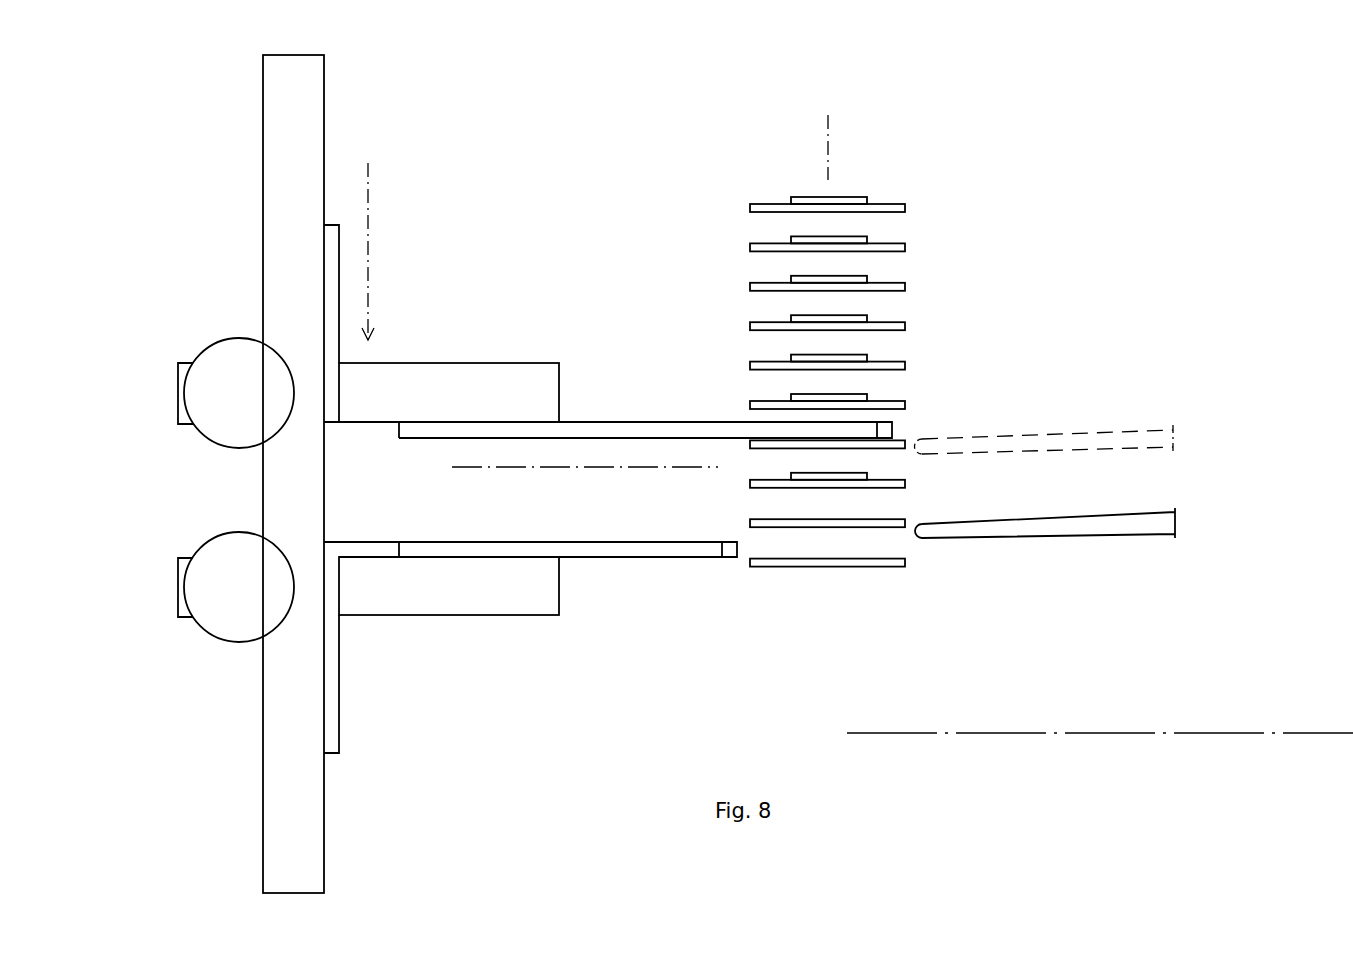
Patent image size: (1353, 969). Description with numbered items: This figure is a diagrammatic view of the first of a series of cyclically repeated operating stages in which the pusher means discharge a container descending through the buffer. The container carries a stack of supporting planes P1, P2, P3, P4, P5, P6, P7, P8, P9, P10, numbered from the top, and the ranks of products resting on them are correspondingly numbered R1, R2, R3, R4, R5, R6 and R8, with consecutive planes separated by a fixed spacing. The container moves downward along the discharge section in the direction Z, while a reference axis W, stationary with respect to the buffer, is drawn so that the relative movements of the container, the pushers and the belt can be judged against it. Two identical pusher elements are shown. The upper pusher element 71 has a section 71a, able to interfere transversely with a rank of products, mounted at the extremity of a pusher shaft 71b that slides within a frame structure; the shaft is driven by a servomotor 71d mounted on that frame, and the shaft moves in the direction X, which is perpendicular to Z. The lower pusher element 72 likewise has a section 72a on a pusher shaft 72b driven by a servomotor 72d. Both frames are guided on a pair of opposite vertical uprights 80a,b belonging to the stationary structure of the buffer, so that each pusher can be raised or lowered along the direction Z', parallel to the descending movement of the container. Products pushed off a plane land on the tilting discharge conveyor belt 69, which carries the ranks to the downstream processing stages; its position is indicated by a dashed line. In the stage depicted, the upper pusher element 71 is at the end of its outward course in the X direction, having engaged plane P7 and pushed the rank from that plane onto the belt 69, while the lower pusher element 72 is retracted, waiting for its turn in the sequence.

The pusher element 71 is at (475, 363).
The section 71a is at (893, 428).
The pusher shaft 71b is at (595, 428).
The servomotor 71d is at (221, 362).
The pusher element 72 is at (453, 615).
The section 72a is at (733, 550).
The pusher shaft 72b is at (607, 550).
The servomotor 72d is at (220, 565).
The pair of opposite vertical uprights 80a,b is at (308, 505).
The conveyor belt 69 is at (1107, 525).
The supporting plane P1 is at (905, 208).
The supporting plane P2 is at (905, 247).
The supporting plane P3 is at (905, 287).
The supporting plane P4 is at (905, 326).
The supporting plane P5 is at (905, 366).
The supporting plane P6 is at (905, 405).
The supporting plane P7 is at (905, 444).
The supporting plane P8 is at (905, 484).
The supporting plane P9 is at (905, 522).
The supporting plane P10 is at (893, 567).
The rank of products R1 is at (805, 197).
The rank of products R2 is at (793, 239).
The rank of products R3 is at (793, 279).
The rank of products R4 is at (793, 316).
The rank of products R5 is at (793, 355).
The rank of products R6 is at (793, 395).
The rank of products R8 is at (852, 474).
The direction of movement of the container Z is at (864, 141).
The vertical movement direction Z' is at (390, 251).
The direction of movement of the pusher X is at (613, 468).
The reference axis W is at (1205, 733).